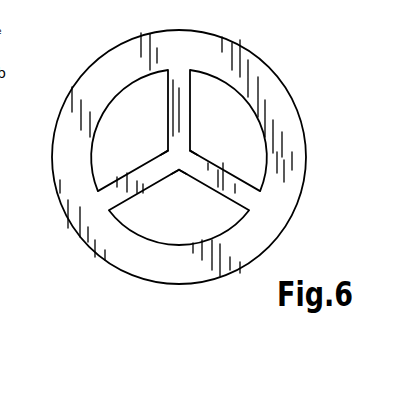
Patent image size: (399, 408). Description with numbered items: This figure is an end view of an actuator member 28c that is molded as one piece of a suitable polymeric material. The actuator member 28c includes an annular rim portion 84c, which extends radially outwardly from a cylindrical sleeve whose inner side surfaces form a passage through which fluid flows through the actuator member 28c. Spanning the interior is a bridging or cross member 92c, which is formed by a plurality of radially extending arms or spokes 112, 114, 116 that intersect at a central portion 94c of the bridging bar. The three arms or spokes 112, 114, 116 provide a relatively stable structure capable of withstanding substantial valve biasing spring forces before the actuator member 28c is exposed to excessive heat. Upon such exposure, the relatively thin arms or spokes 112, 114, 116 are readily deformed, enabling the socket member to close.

The actuator member 28c is at (300, 73).
The annular rim portion 84c is at (300, 120).
The bridging or cross member 92c is at (128, 170).
The central portion 94c is at (176, 157).
The arm or spoke 112 is at (177, 126).
The arm or spoke 114 is at (218, 182).
The arm or spoke 116 is at (140, 180).